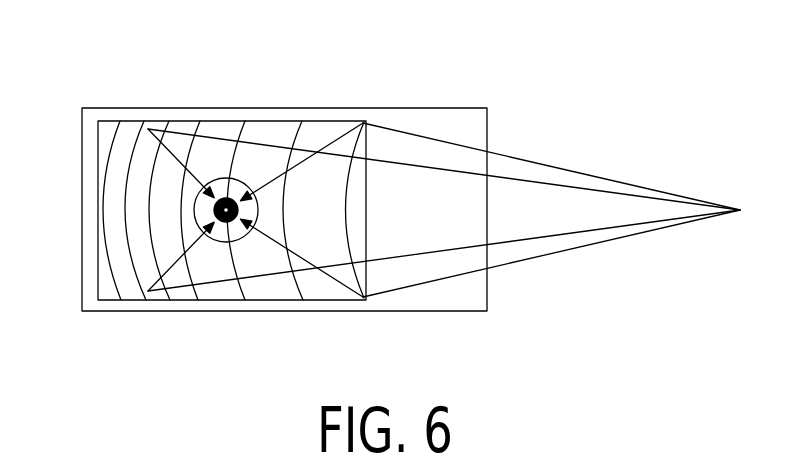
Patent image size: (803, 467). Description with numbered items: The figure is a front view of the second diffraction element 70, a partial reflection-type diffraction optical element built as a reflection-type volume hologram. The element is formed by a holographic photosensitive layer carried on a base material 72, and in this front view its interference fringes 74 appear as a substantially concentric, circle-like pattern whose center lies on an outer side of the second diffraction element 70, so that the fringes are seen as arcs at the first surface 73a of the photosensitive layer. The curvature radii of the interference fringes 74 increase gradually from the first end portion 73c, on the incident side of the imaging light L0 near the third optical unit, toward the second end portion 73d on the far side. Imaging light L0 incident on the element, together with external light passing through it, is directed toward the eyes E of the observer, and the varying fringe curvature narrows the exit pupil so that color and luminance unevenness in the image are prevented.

The second diffraction element 70 is at (157, 100).
The base material 72 is at (448, 115).
The first surface of the holographic photosensitive layer 73a is at (323, 130).
The first end portion 73c is at (367, 190).
The second end portion 73d is at (100, 193).
The interference fringes 74 is at (238, 128).
The eyes E is at (232, 242).
The imaging light L0 is at (610, 180).